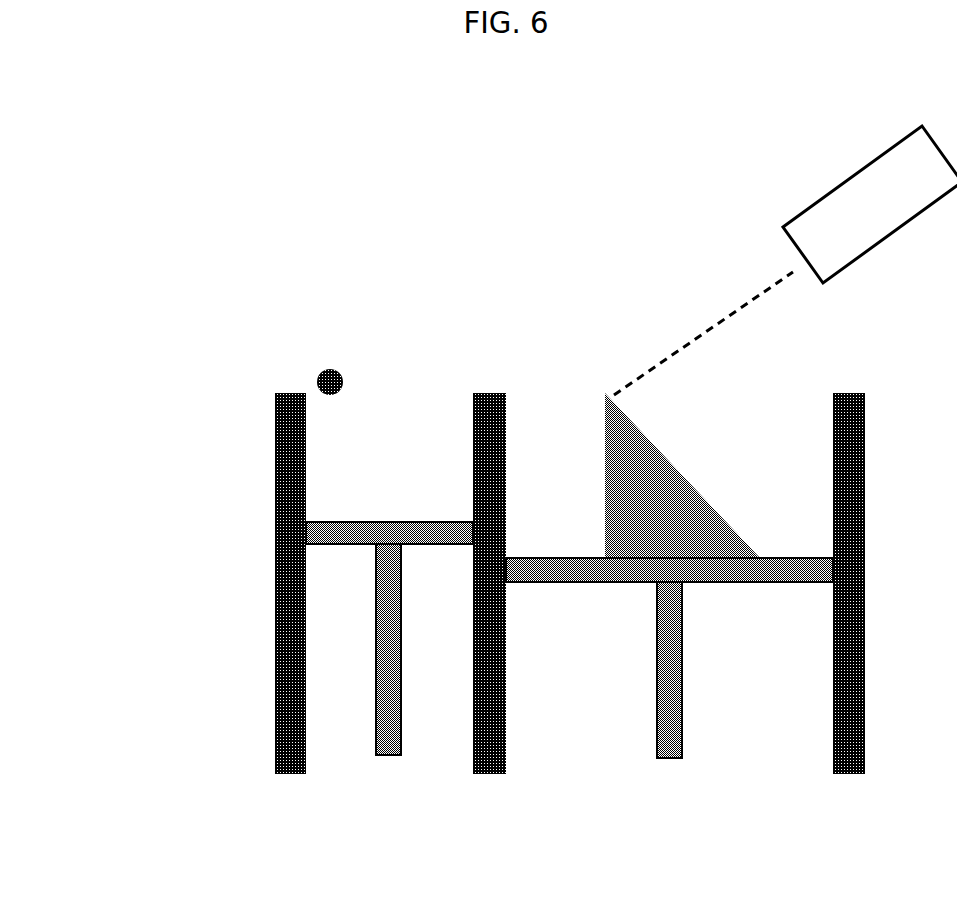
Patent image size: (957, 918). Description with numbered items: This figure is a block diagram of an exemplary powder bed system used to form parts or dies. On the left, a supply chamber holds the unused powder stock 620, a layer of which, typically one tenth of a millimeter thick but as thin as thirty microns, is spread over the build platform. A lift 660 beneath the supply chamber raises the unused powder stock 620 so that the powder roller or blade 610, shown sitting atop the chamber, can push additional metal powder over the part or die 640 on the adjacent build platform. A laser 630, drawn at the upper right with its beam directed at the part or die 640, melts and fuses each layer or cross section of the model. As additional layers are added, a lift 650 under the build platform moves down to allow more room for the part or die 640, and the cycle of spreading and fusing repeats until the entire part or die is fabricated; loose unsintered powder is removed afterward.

The powder roller or blade 610 is at (318, 369).
The unused powder stock 620 is at (390, 583).
The laser 630 is at (785, 259).
The part or die 640 is at (638, 468).
The lift 650 is at (673, 673).
The lift 660 is at (388, 665).